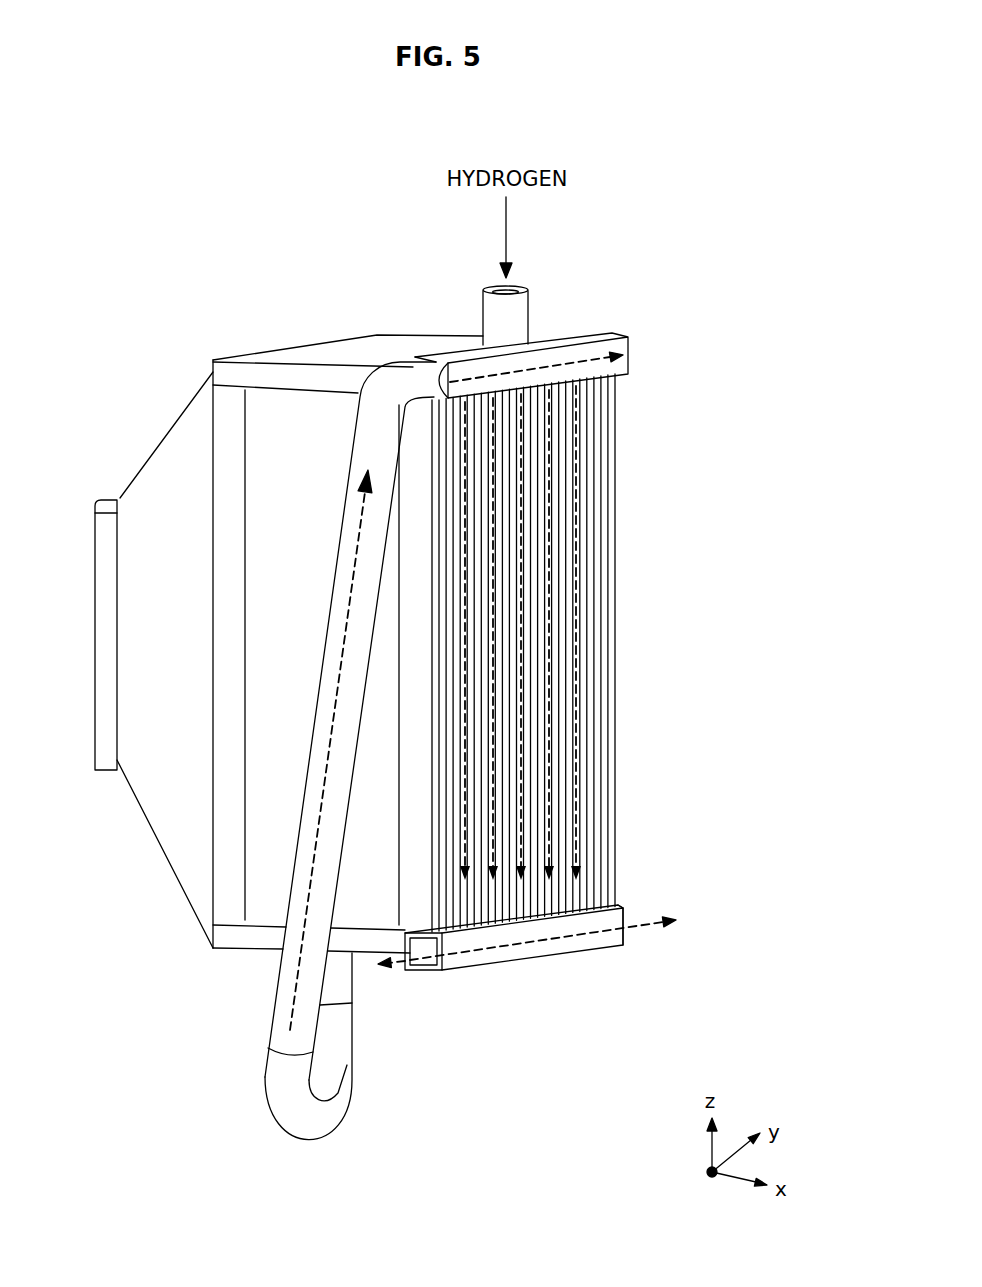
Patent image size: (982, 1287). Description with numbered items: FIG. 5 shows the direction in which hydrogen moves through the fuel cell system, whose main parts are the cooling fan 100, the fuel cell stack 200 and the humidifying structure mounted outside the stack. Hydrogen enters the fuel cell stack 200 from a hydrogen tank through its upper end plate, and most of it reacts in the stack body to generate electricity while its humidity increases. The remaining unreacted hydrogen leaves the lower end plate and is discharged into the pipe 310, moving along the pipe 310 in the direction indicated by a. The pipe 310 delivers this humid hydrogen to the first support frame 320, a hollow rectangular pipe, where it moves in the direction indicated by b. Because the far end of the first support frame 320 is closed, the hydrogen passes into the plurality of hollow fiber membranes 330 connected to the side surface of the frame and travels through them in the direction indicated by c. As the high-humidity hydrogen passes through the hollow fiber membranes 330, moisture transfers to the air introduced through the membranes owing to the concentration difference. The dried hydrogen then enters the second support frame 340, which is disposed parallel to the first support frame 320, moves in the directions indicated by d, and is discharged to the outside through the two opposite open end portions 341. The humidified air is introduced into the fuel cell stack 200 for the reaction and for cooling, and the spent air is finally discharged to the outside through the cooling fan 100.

The cooling fan 100 is at (155, 487).
The fuel cell stack 200 is at (328, 357).
The pipe 310 is at (283, 1038).
The first support frame 320 is at (573, 332).
The hollow fiber membranes 330 is at (612, 770).
The second support frame 340 is at (512, 952).
The end portions 341 is at (627, 917).
The direction of hydrogen movement in the pipe a is at (328, 686).
The direction of hydrogen movement in the first support frame b is at (587, 360).
The direction of hydrogen movement in the hollow fiber membranes c is at (577, 642).
The directions of hydrogen movement in the second support frame d is at (593, 932).